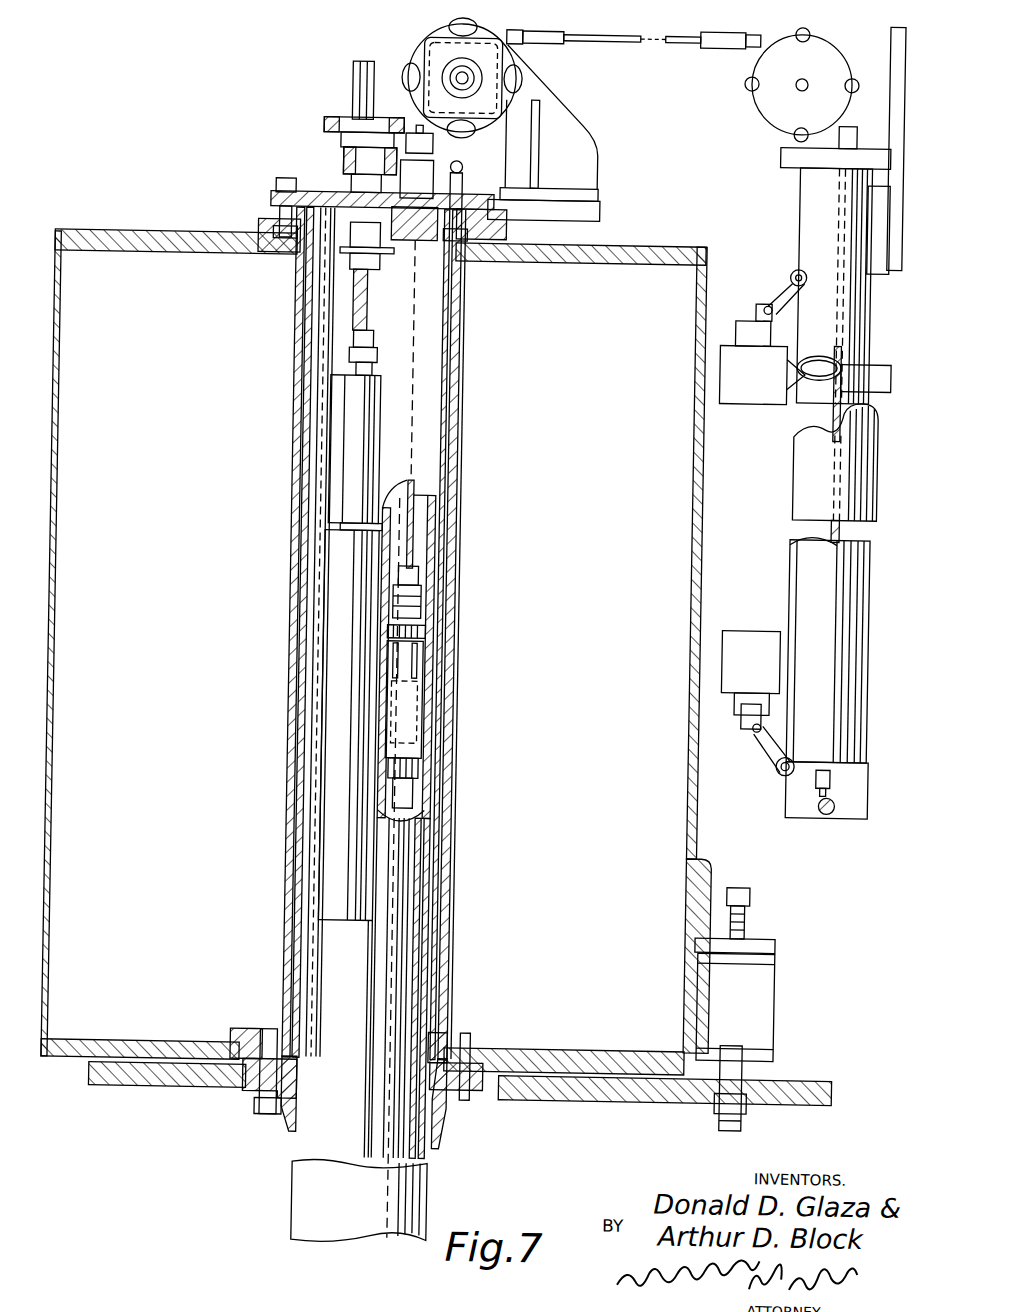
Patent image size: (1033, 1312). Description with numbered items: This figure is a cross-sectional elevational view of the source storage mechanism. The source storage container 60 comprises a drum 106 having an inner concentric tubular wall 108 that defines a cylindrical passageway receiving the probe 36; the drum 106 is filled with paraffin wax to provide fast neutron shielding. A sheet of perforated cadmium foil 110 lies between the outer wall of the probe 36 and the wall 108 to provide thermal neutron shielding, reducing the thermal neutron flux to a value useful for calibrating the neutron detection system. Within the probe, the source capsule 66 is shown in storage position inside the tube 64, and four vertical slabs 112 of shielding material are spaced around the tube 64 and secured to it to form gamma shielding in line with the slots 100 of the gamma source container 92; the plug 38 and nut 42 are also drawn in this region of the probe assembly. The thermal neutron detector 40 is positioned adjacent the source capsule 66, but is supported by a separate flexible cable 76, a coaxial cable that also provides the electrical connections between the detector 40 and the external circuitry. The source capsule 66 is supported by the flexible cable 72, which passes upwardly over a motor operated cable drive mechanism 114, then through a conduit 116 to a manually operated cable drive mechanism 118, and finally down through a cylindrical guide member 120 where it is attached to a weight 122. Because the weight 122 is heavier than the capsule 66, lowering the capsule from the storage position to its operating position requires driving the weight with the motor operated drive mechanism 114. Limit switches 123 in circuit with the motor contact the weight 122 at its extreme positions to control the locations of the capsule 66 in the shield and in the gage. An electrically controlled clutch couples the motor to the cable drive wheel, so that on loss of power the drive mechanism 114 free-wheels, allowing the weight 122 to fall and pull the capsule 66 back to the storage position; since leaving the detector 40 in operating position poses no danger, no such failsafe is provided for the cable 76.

The probe 36 is at (435, 855).
The plug 38 is at (430, 750).
The thermal neutron detector 40 is at (328, 614).
The threaded nut 42 is at (450, 632).
The source storage container 60 is at (700, 832).
The tube 64 is at (430, 546).
The source capsule 66 is at (415, 705).
The flexible cable 72 is at (407, 506).
The flexible cable 76 is at (345, 303).
The gamma source container 92 is at (420, 650).
The slots 100 is at (400, 650).
The drum 106 is at (700, 522).
The inner concentric tubular wall 108 is at (454, 381).
The perforated cadmium foil 110 is at (450, 418).
The vertical slabs of shielding material 112 is at (385, 620).
The motor operated cable drive mechanism 114 is at (421, 46).
The conduit 116 is at (589, 39).
The manually operated cable drive mechanism 118 is at (757, 105).
The cylindrical guide member 120 is at (793, 203).
The weight 122 is at (810, 578).
The limit switches 123 is at (755, 397).